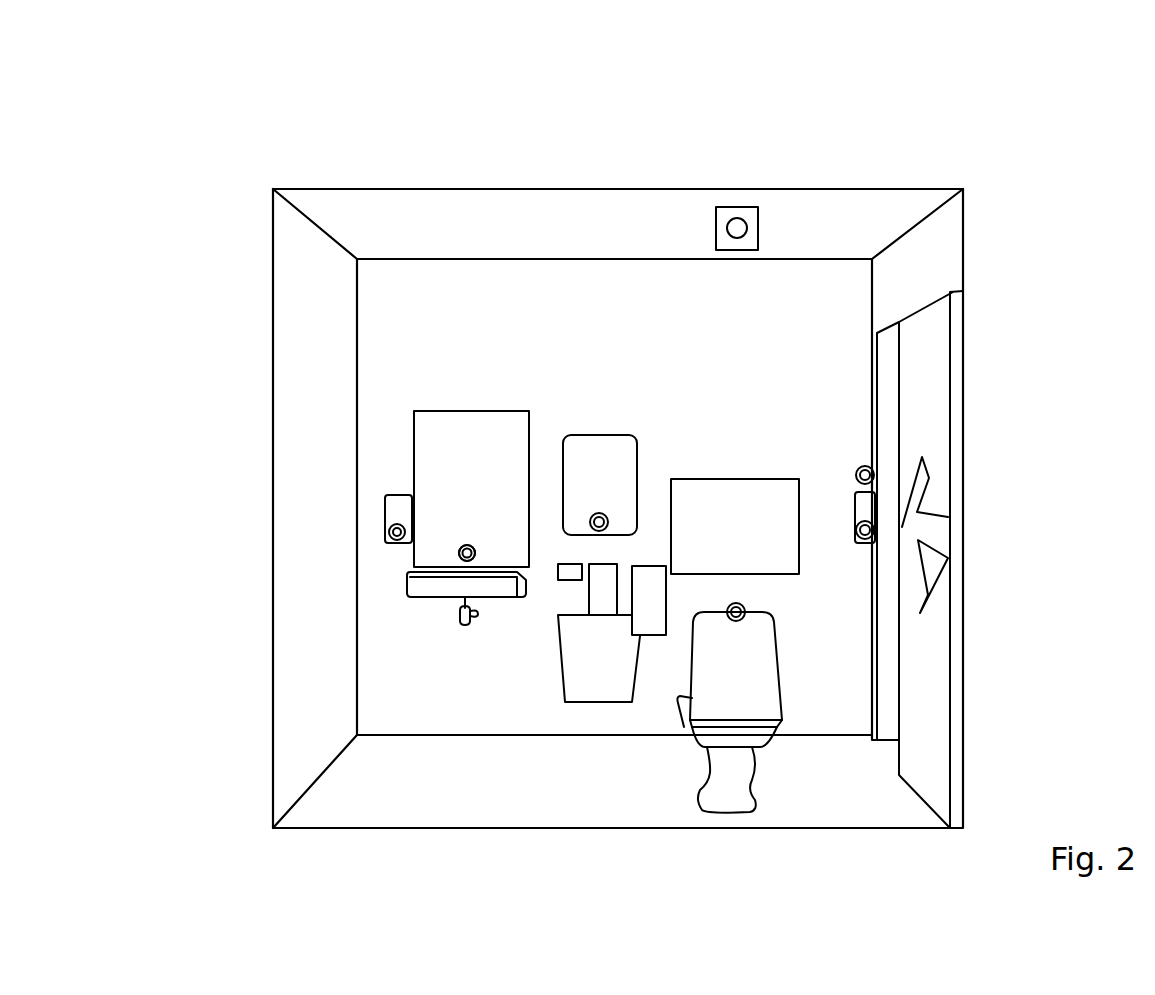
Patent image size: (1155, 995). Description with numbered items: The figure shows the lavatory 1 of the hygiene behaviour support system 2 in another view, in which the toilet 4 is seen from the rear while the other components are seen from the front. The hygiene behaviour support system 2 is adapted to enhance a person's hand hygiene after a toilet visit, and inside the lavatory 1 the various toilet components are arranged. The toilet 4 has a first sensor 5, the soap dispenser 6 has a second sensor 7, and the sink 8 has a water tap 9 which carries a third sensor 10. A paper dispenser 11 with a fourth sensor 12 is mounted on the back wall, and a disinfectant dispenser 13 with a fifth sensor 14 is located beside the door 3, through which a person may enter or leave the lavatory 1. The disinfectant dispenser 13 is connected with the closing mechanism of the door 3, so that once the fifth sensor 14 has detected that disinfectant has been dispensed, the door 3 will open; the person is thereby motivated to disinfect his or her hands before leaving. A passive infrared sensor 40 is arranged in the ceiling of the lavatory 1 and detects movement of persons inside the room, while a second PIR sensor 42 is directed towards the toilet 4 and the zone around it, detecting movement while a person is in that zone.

The lavatory 1 is at (762, 277).
The hygiene behaviour support system 2 is at (496, 301).
The door 3 is at (930, 348).
The toilet 4 is at (757, 700).
The first sensor 5 is at (737, 621).
The soap dispenser 6 is at (393, 507).
The second sensor 7 is at (392, 542).
The sink 8 is at (430, 587).
The water tap 9 is at (459, 551).
The third sensor 10 is at (476, 553).
The paper dispenser 11 is at (582, 447).
The fourth sensor 12 is at (599, 513).
The disinfectant dispenser 13 is at (870, 502).
The fifth sensor 14 is at (875, 530).
The passive infrared (PIR) sensor 40 is at (748, 213).
The second PIR sensor 42 is at (737, 218).